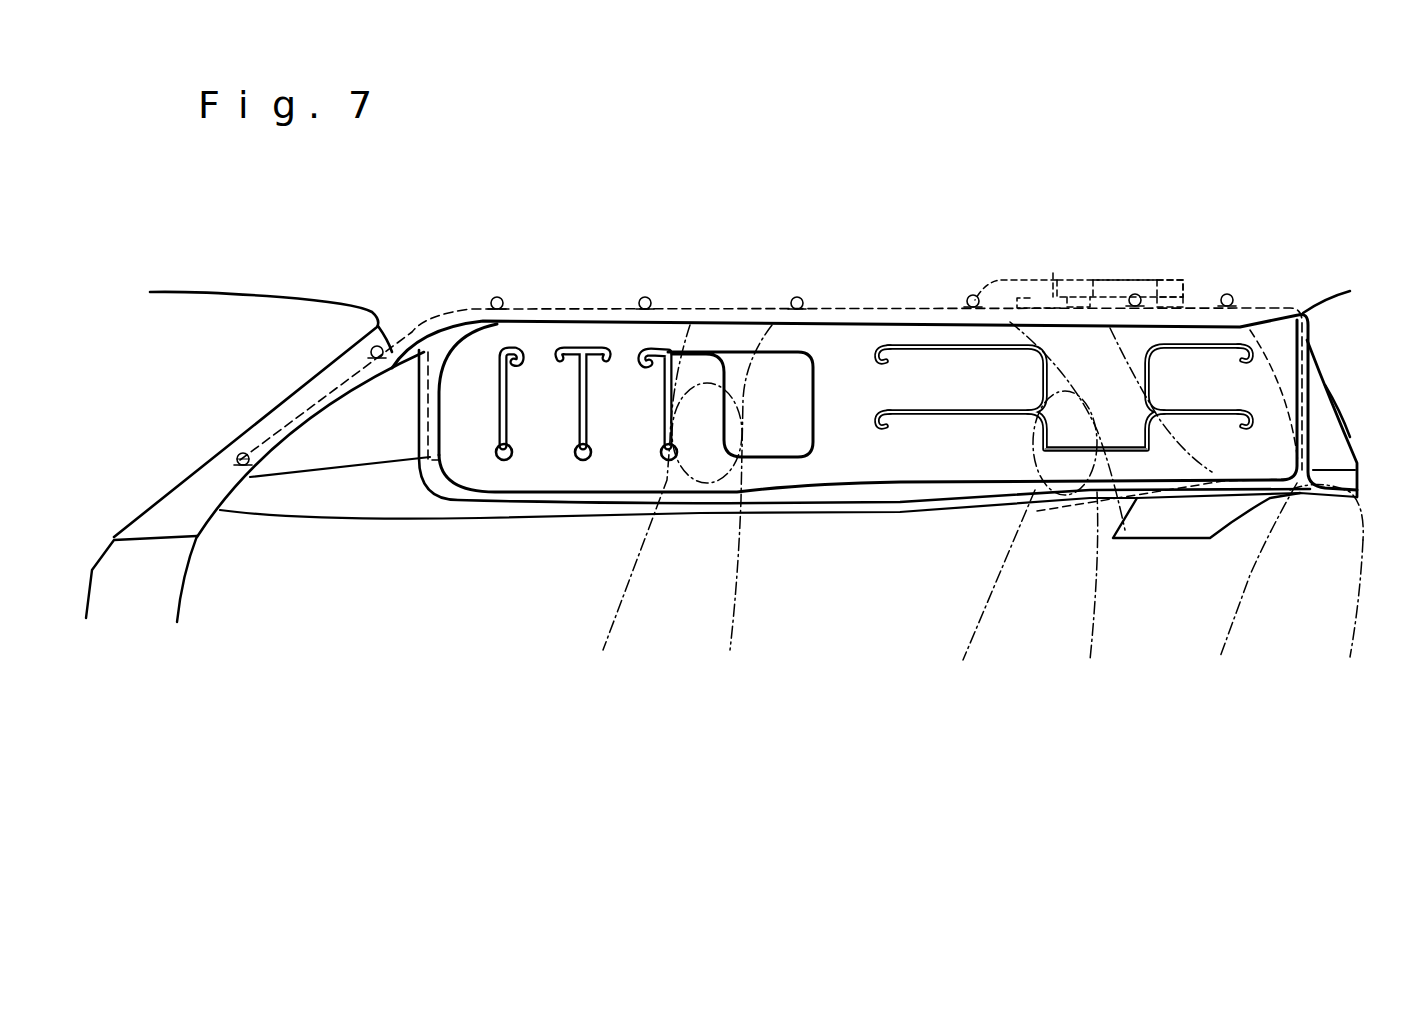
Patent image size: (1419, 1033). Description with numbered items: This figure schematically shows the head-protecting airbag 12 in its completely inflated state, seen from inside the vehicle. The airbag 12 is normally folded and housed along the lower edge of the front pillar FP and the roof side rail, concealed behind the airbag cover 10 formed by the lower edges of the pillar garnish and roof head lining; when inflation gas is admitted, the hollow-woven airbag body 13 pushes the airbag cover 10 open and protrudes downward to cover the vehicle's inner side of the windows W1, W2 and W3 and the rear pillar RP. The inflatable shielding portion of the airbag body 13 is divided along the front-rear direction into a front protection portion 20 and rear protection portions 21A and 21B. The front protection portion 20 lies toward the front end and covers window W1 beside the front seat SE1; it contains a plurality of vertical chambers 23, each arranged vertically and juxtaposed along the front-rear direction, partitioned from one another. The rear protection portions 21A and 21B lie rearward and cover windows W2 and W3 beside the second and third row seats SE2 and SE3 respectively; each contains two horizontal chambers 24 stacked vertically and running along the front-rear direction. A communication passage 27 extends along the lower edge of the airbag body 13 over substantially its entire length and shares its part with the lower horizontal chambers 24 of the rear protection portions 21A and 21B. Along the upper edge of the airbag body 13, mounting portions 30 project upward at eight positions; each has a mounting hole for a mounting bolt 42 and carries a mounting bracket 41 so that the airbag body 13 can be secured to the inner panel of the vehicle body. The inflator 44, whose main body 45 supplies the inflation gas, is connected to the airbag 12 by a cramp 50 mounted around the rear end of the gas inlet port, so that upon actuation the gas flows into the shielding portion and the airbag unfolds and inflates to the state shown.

The airbag cover 10 is at (718, 318).
The airbag 12 is at (868, 406).
The airbag body 13 is at (853, 330).
The front protection portion 20 is at (553, 504).
The rear protection portion 21A is at (960, 486).
The rear protection portion 21B is at (1225, 484).
The vertical chambers 23 is at (470, 387).
The horizontal chambers 24 is at (940, 443).
The communication passage 27 is at (803, 465).
The mounting portions 30 is at (497, 296).
The mounting bracket 41 is at (645, 297).
The mounting bolt 42 is at (243, 450).
The inflator 44 is at (1126, 278).
The main body 45 is at (1102, 280).
The cramp 50 is at (1053, 273).
The front pillar FP is at (338, 352).
The rear pillar RP is at (1331, 376).
The window W1 is at (350, 507).
The window W2 is at (863, 517).
The window W3 is at (1262, 374).
The front seat SE1 is at (610, 620).
The second row seat SE2 is at (970, 620).
The third row seat SE3 is at (1230, 620).